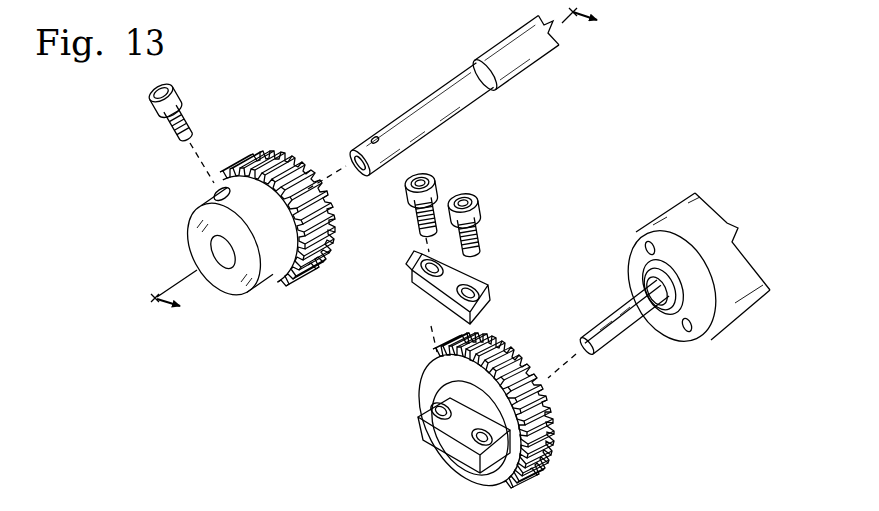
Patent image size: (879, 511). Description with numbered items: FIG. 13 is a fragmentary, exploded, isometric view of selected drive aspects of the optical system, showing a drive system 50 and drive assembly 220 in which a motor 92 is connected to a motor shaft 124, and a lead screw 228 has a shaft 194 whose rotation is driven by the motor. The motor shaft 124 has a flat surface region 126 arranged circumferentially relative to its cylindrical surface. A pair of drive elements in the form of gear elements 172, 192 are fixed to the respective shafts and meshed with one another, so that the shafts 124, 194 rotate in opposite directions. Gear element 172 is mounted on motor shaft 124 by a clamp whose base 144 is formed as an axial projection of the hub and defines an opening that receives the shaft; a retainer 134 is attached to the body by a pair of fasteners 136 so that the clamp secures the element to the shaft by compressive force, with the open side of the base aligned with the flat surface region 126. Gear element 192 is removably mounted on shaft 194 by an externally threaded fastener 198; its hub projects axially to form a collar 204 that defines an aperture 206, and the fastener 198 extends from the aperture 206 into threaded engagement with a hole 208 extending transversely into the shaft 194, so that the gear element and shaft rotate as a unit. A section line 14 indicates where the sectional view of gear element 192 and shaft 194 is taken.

The section line 14- 14 is at (392, 171).
The drive system 50 is at (611, 85).
The motor 92 is at (658, 263).
The motor shaft 124 is at (607, 320).
The flat surface region 126 is at (589, 310).
The retainer 134 is at (474, 272).
The fasteners 136 is at (437, 177).
The base 144 is at (443, 446).
The gear element 172 is at (496, 258).
The gear element 192 is at (249, 205).
The shaft 194 is at (439, 92).
The fastener 198 is at (162, 88).
The collar 204 is at (271, 286).
The aperture 206 is at (213, 197).
The hole 208 is at (350, 134).
The drive assembly 220 is at (610, 112).
The lead screw 228 is at (506, 36).